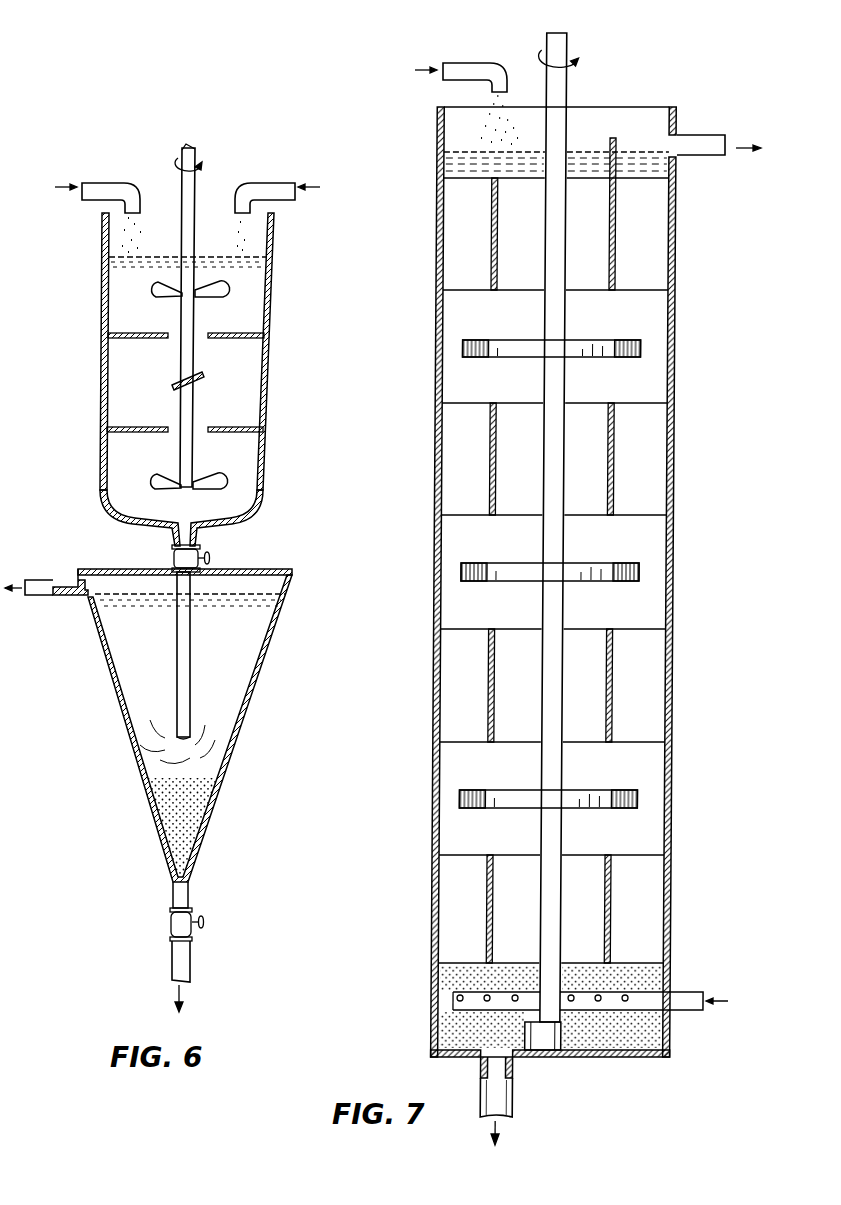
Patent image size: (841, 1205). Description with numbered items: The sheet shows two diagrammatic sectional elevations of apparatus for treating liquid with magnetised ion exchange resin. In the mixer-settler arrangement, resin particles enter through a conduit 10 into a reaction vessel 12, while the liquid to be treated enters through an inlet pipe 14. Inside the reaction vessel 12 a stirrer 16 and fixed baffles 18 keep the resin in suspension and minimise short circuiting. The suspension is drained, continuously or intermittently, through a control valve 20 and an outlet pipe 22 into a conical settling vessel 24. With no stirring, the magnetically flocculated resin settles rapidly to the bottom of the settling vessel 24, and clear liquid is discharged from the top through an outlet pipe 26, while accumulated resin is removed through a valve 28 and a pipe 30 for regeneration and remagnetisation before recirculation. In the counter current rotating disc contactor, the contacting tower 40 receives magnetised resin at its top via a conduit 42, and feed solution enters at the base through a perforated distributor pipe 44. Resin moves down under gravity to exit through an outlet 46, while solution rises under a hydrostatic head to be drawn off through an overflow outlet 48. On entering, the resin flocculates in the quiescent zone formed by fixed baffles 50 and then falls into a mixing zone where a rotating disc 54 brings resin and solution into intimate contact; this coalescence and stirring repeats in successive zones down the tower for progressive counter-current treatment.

In FIG. 6, the conduit 10 is at (107, 183).
In FIG. 6, the reaction vessel 12 is at (271, 392).
In FIG. 6, the inlet pipe 14 is at (266, 183).
In FIG. 6, the stirrer 16 is at (188, 307).
In FIG. 6, the fixed baffles 18 is at (232, 339).
In FIG. 6, the control valve 20 is at (209, 552).
In FIG. 6, the outlet pipe 22 is at (184, 693).
In FIG. 6, the settling vessel 24 is at (272, 637).
In FIG. 6, the outlet pipe 26 is at (42, 576).
In FIG. 6, the valve 28 is at (180, 922).
In FIG. 6, the pipe 30 is at (180, 956).
In FIG. 7, the contacting tower 40 is at (676, 312).
In FIG. 7, the conduit 42 is at (470, 70).
In FIG. 7, the perforated distributor pipe 44 is at (643, 1010).
In FIG. 7, the outlet 46 is at (497, 1098).
In FIG. 7, the overflow outlet 48 is at (708, 151).
In FIG. 7, the fixed baffles 50 is at (496, 200).
In FIG. 7, the rotating disc 54 is at (641, 350).